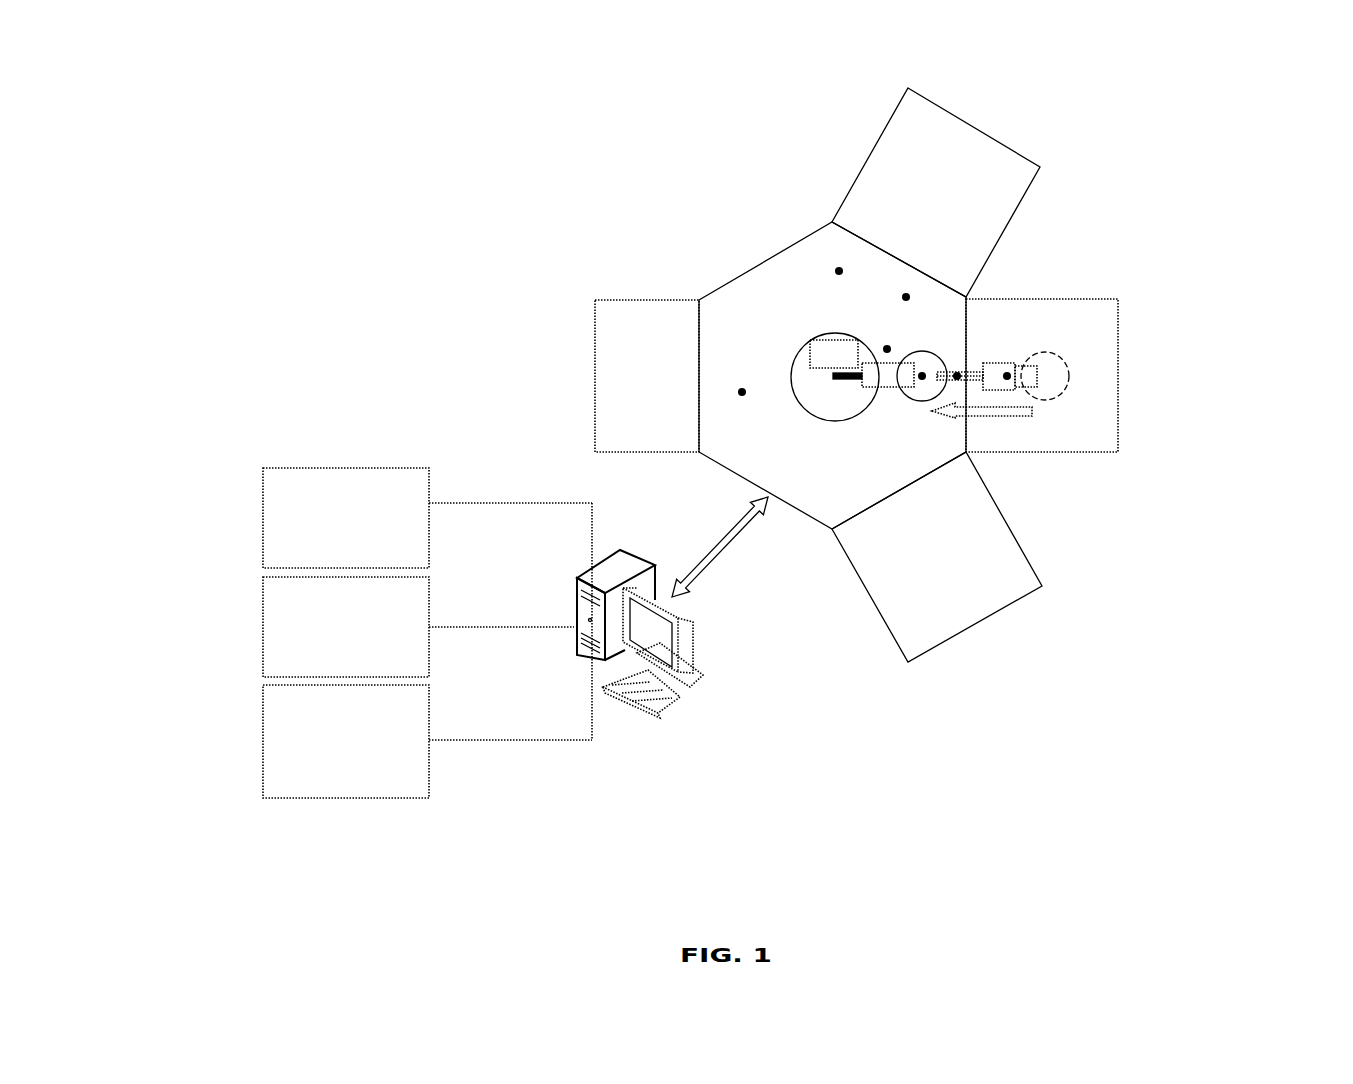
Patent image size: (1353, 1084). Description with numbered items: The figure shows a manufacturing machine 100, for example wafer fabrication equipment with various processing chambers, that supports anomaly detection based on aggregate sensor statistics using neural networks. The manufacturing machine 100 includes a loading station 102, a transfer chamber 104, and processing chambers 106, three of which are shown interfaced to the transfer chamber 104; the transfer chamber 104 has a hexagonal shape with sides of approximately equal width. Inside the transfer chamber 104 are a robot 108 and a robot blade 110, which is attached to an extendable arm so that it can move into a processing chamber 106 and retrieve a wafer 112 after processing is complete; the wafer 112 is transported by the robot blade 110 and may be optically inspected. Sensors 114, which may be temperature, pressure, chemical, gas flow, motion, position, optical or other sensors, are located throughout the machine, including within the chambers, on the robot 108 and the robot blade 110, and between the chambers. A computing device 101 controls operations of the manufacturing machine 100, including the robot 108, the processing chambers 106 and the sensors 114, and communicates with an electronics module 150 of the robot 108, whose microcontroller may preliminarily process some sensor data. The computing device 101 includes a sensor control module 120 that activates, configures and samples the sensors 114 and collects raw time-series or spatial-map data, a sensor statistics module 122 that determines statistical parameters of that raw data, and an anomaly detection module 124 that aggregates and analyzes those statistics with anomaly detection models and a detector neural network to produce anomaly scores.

The manufacturing machine 100 is at (210, 125).
The computing device 101 is at (695, 703).
The loading station 102 is at (615, 320).
The transfer chamber 104 is at (760, 278).
The processing chamber 106 is at (1102, 310).
The robot 108 is at (817, 397).
The robot blade 110 is at (888, 389).
The wafer 112 is at (922, 340).
The sensors 114 is at (1005, 362).
The sensor control module (SCM) 120 is at (427, 604).
The sensor statistics module (SSM) 122 is at (418, 627).
The anomaly detection module (ADM) 124 is at (427, 741).
The electronics module 150 is at (703, 500).